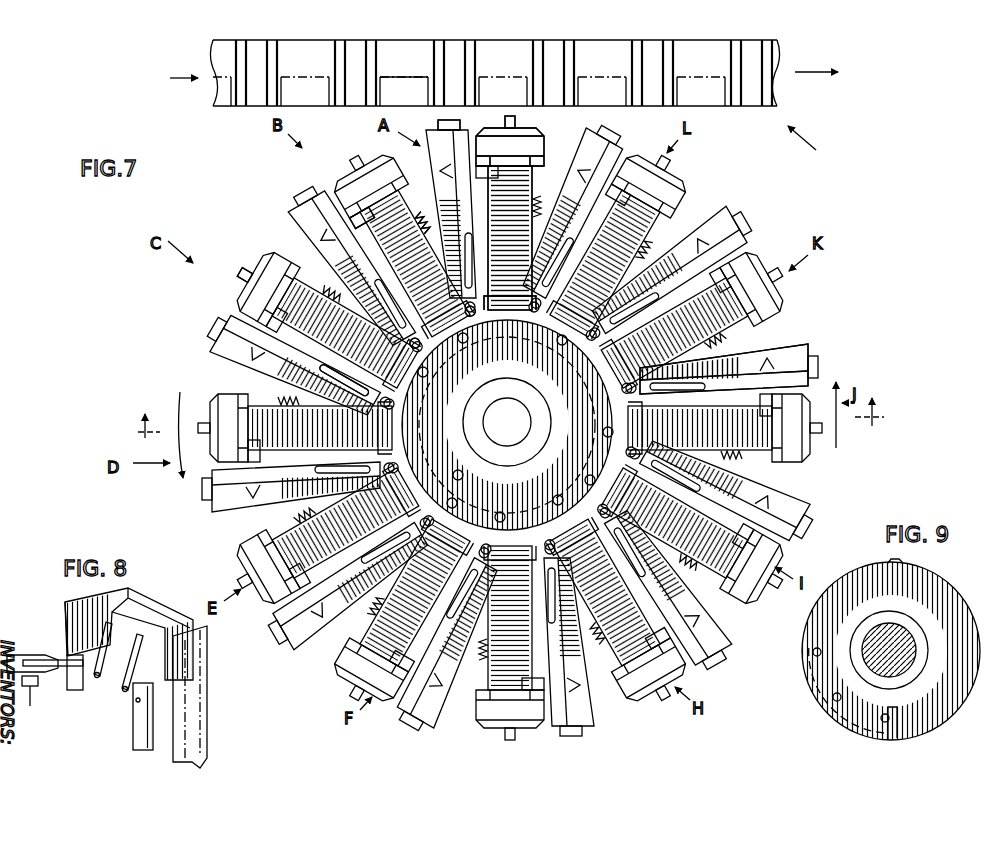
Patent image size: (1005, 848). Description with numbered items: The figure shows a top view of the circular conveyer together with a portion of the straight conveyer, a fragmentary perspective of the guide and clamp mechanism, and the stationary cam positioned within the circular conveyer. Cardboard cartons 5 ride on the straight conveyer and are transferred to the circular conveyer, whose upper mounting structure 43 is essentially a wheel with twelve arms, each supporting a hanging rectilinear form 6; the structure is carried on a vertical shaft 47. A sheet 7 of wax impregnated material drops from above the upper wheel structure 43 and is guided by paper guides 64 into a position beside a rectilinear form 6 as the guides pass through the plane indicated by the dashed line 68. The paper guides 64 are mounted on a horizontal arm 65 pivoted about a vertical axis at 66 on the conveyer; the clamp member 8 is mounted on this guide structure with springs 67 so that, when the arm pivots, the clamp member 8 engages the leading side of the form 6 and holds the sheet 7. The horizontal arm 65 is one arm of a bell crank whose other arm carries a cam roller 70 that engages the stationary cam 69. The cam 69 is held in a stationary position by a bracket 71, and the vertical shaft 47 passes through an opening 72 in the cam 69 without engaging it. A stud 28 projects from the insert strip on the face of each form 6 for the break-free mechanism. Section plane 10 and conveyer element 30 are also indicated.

In FIG. 7, the cardboard cartons 5 is at (370, 112).
In FIG. 7, the rectilinear form 6 is at (533, 140).
In FIG. 8, the rectilinear form 6 is at (207, 692).
In FIG. 7, the sheet of wax impregnated material 7 is at (468, 130).
In FIG. 7, the clamp member 8 is at (504, 128).
In FIG. 7, the section line 10 is at (508, 425).
In FIG. 7, the stud 28 is at (226, 278).
In FIG. 7, the conveyor 30 is at (395, 50).
In FIG. 7, the upper mounting structure 43 is at (782, 350).
In FIG. 8, the upper mounting structure 43 is at (160, 606).
In FIG. 7, the vertical shaft 47 is at (516, 404).
In FIG. 9, the vertical shaft 47 is at (899, 640).
In FIG. 7, the paper guides 64 is at (465, 186).
In FIG. 8, the paper guides 64 is at (97, 677).
In FIG. 7, the horizontal arm 65 is at (380, 307).
In FIG. 8, the horizontal arm 65 is at (125, 691).
In FIG. 7, the pivot 66 is at (446, 302).
In FIG. 8, the pivot 66 is at (70, 687).
In FIG. 7, the springs 67 is at (336, 192).
In FIG. 8, the springs 67 is at (152, 712).
In FIG. 7, the dashed line 68 is at (531, 196).
In FIG. 7, the stationary cam 69 is at (403, 431).
In FIG. 8, the stationary cam 69 is at (40, 655).
In FIG. 9, the stationary cam 69 is at (944, 708).
In FIG. 8, the cam roller 70 is at (30, 708).
In FIG. 7, the bracket 71 is at (520, 488).
In FIG. 9, the bracket 71 is at (820, 690).
In FIG. 7, the opening 72 is at (552, 430).
In FIG. 9, the opening 72 is at (922, 642).